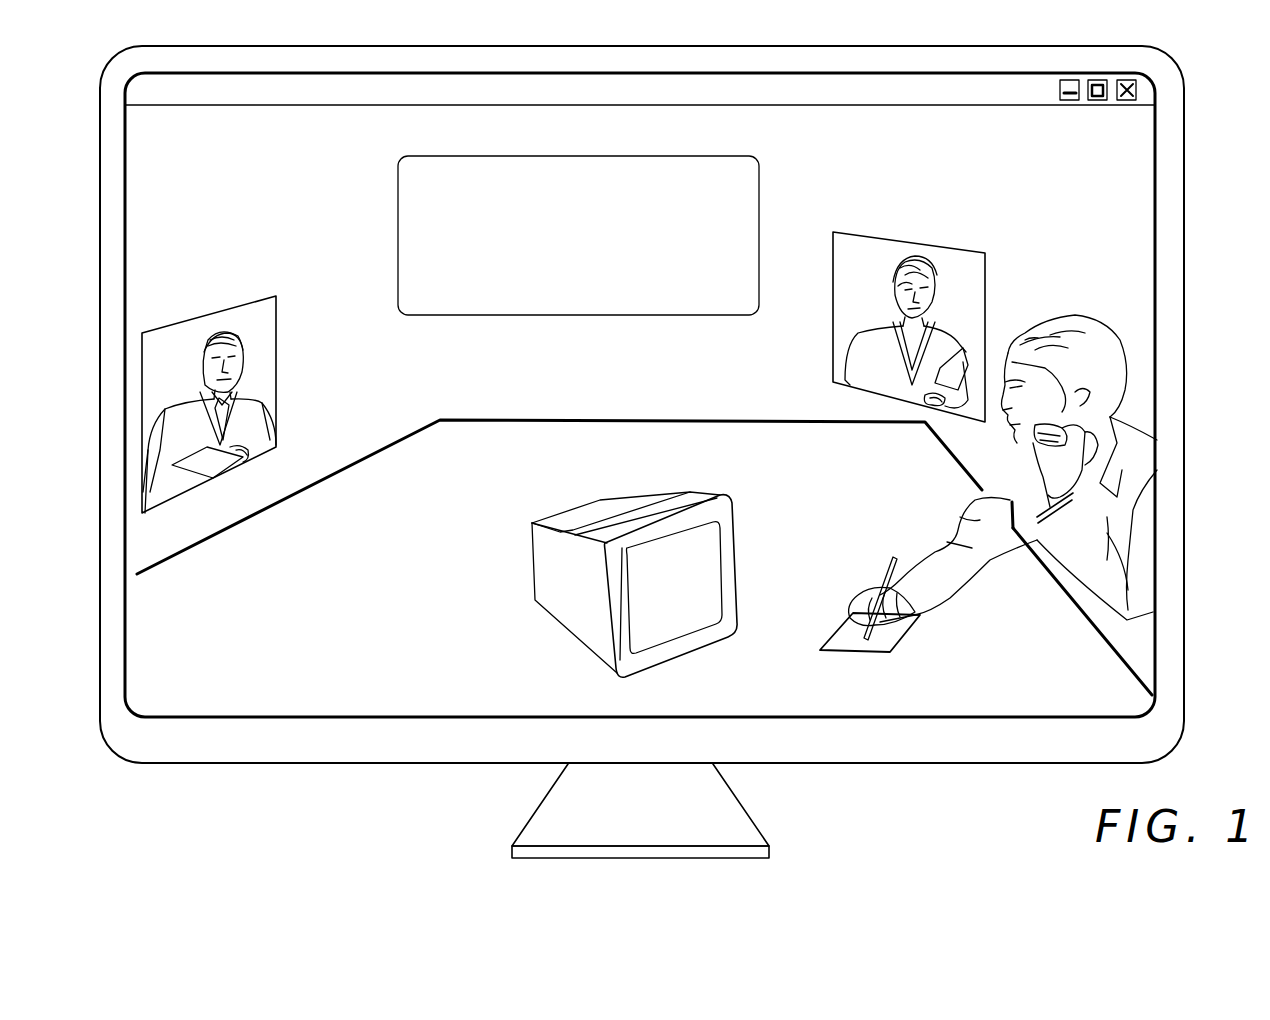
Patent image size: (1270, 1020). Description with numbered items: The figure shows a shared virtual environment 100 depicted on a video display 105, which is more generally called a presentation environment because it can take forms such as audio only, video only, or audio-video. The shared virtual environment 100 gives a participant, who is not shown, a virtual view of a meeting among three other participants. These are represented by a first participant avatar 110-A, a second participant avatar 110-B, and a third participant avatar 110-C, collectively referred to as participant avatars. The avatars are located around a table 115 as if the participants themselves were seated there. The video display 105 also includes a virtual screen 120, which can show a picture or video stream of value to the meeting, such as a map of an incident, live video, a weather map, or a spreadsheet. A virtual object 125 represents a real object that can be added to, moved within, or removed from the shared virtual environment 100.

The shared virtual environment 100 is at (1088, 207).
The video display 105 is at (1155, 650).
The first participant avatar 110-A is at (266, 335).
The second participant avatar 110-B is at (845, 318).
The third participant avatar 110-C is at (966, 508).
The table 115 is at (614, 432).
The virtual screen 120 is at (577, 305).
The virtual object 125 is at (728, 537).